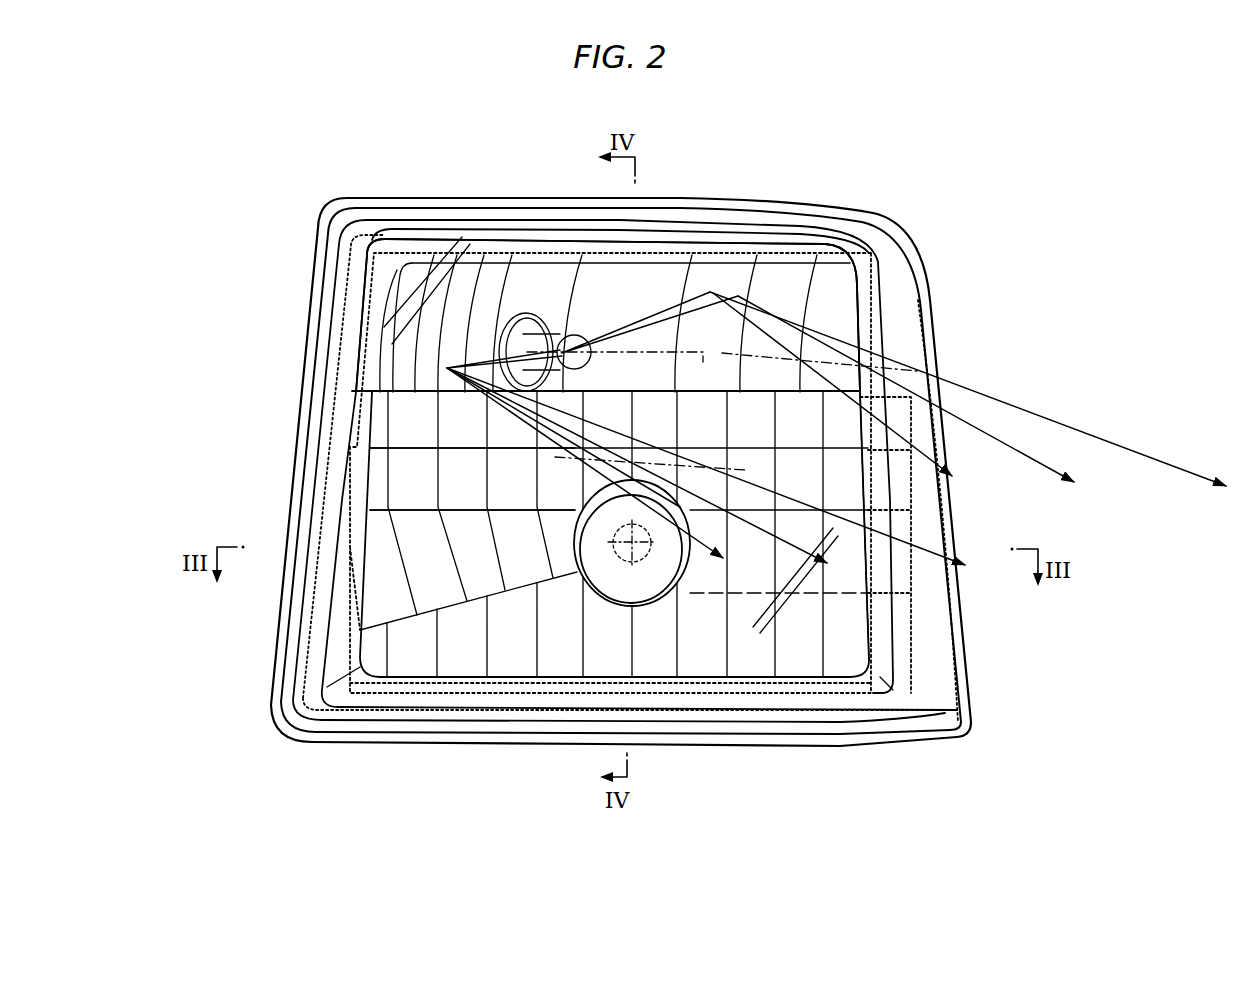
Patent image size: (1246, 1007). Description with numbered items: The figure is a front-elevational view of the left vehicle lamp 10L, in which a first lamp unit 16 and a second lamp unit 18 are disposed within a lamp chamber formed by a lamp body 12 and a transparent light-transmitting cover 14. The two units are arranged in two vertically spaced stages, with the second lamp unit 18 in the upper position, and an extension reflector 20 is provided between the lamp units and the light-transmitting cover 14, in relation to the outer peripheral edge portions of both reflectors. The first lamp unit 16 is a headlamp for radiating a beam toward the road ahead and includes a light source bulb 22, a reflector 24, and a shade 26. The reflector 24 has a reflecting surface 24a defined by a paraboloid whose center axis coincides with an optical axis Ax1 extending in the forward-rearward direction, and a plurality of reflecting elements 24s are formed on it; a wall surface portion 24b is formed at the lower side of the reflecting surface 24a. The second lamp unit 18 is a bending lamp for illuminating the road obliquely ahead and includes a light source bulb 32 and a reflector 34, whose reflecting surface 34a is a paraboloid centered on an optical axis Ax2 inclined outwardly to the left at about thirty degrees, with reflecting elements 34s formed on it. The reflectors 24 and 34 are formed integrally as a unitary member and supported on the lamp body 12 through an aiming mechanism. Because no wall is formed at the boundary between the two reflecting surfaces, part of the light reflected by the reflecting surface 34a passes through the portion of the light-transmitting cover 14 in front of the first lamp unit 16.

The vehicle lamp 10L is at (981, 239).
The lamp body 12 is at (672, 193).
The light-transmitting cover 14 is at (722, 216).
The first lamp unit 16 is at (915, 528).
The second lamp unit 18 is at (878, 320).
The extension reflector 20 is at (755, 673).
The light source bulb 22 is at (612, 534).
The reflector 24 is at (632, 540).
The reflecting surface 24a is at (840, 624).
The wall surface portion 24b is at (462, 676).
The reflecting elements 24s is at (407, 532).
The shade 26 is at (568, 545).
The light source bulb 32 is at (576, 330).
The reflector 34 is at (625, 273).
The reflecting surface 34a is at (828, 300).
The reflecting elements 34s is at (560, 272).
The optical axis Ax1 is at (630, 548).
The optical axis Ax2 is at (703, 365).